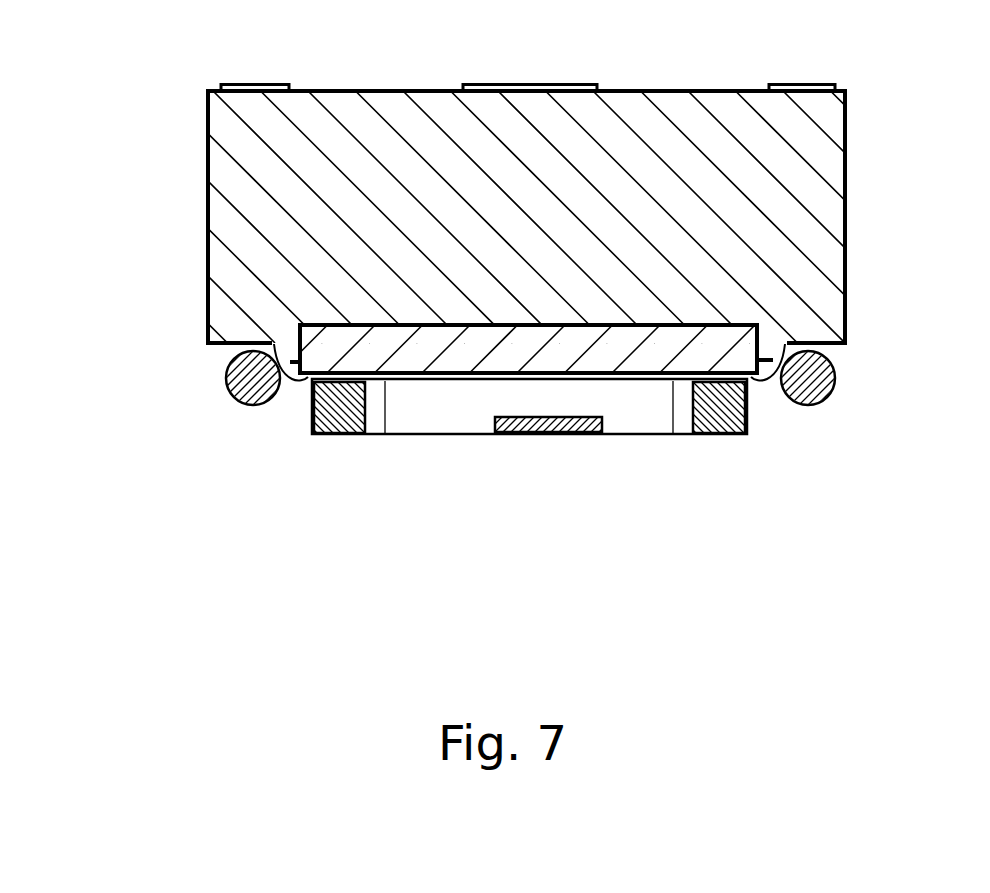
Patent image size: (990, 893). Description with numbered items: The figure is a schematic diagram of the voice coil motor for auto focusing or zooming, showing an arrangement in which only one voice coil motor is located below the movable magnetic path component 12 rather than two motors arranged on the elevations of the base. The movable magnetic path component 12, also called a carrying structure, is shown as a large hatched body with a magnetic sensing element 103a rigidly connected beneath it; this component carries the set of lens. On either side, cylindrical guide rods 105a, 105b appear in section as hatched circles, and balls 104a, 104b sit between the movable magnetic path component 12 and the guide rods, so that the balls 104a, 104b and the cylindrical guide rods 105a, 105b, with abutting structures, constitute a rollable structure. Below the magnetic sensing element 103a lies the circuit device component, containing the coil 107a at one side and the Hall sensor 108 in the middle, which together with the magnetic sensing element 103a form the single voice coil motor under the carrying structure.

The movable magnetic path component 12 is at (432, 103).
The magnetic sensing element 103a is at (468, 343).
The ball 104a is at (292, 362).
The ball 104b is at (766, 368).
The cylindrical guide rod 105a is at (230, 382).
The cylindrical guide rod 105b is at (800, 390).
The coil 107a is at (342, 408).
The Hall sensor 108 is at (528, 432).